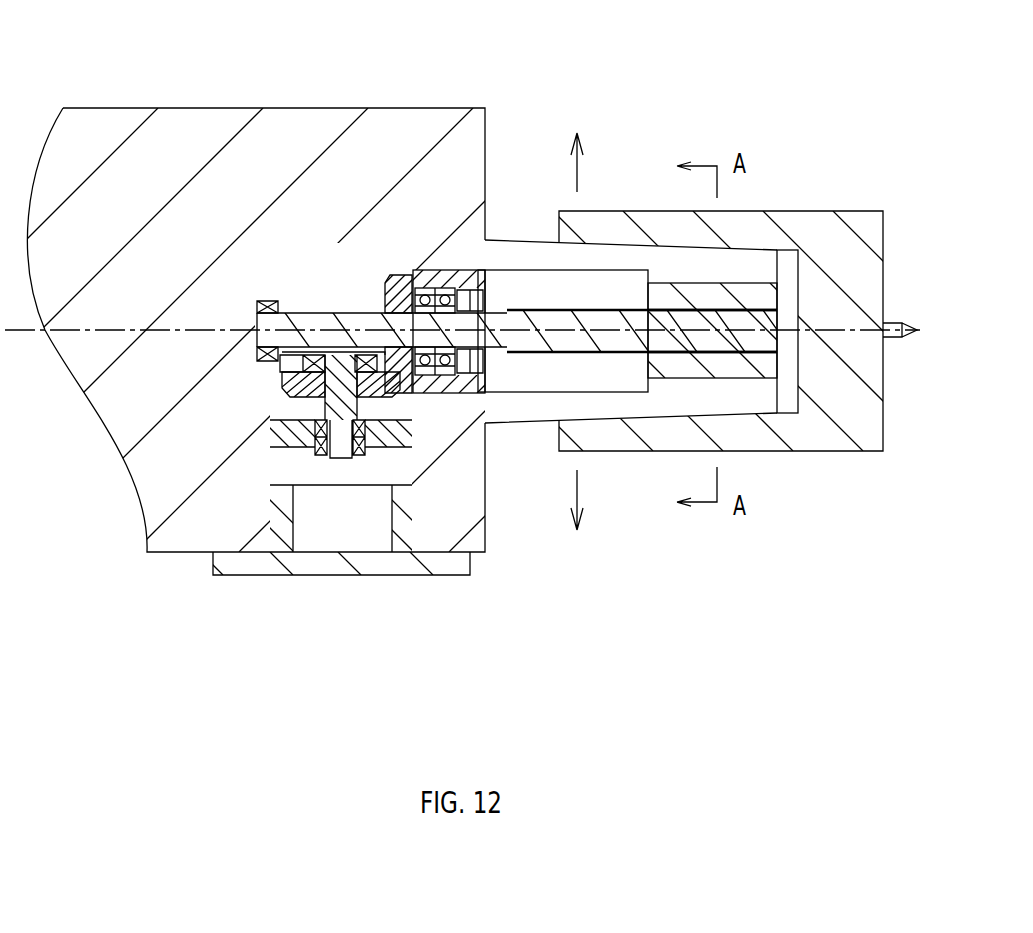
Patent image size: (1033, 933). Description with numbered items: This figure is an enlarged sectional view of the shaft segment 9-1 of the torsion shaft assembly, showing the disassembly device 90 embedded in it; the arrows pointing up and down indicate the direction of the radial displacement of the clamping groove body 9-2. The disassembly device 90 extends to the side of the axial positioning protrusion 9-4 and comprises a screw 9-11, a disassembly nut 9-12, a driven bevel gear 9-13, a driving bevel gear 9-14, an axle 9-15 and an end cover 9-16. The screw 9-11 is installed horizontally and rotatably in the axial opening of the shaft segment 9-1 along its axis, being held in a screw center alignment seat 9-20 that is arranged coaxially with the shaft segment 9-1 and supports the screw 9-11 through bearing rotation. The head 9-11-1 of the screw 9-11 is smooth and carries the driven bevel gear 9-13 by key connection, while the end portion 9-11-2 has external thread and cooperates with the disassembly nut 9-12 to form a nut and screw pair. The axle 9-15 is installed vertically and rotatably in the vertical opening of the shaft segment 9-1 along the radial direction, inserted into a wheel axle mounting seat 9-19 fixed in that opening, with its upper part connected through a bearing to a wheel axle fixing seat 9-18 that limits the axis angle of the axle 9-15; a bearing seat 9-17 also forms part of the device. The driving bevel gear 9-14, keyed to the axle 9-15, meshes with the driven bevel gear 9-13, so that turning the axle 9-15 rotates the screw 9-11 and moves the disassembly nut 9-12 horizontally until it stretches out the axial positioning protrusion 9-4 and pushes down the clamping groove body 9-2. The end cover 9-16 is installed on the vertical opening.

The shaft segment 9-1 is at (197, 135).
The clamping groove body 9-2 is at (858, 390).
The axial positioning protrusion 9-4 is at (686, 400).
The screw 9-11 is at (550, 322).
The head of the screw 9-11-1 is at (335, 340).
The end portion of the screw 9-11-2 is at (675, 305).
The disassembly nut 9-12 is at (747, 295).
The driven bevel gear 9-13 is at (395, 285).
The driving bevel gear 9-14 is at (290, 390).
The axle 9-15 is at (330, 457).
The end cover 9-16 is at (368, 560).
The bearing seat 9-17 is at (271, 372).
The wheel axle fixing seat 9-18 is at (420, 470).
The wheel axle mounting seat 9-19 is at (283, 382).
The screw center alignment seat 9-20 is at (446, 277).
The disassembly device 90 is at (283, 470).